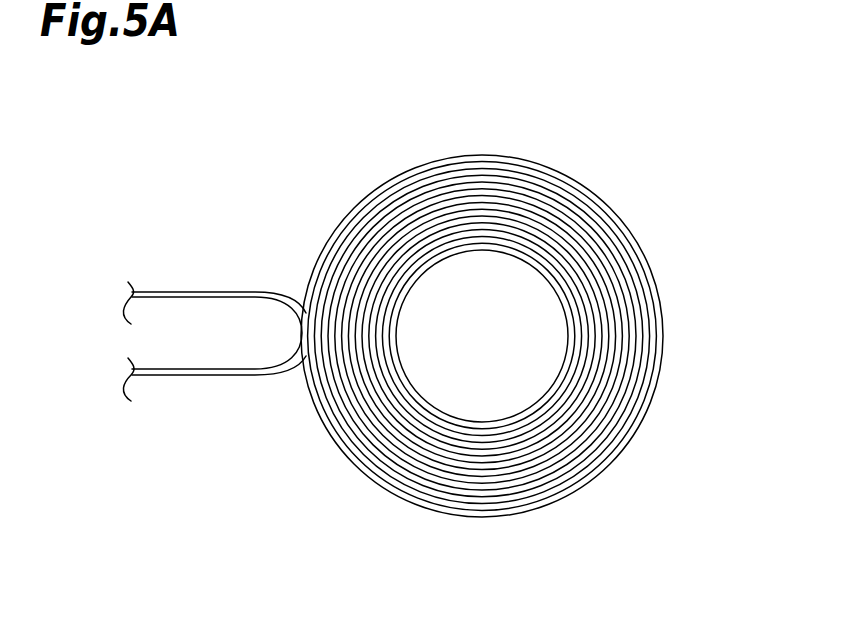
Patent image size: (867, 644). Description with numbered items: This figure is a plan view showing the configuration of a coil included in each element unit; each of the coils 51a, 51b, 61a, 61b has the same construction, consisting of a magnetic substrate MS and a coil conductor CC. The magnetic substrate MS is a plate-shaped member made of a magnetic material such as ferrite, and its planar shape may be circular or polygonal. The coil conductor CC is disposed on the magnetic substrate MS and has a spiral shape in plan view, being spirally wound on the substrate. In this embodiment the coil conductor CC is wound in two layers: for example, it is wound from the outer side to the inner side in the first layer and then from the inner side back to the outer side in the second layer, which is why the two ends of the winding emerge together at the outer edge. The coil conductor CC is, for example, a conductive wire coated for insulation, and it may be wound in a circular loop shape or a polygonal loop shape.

The coil 51a is at (466, 133).
The coil 51b is at (445, 341).
The coil 61a is at (445, 341).
The coil 61b is at (445, 341).
The magnetic substrate MS is at (648, 262).
The coil conductor CC is at (610, 453).